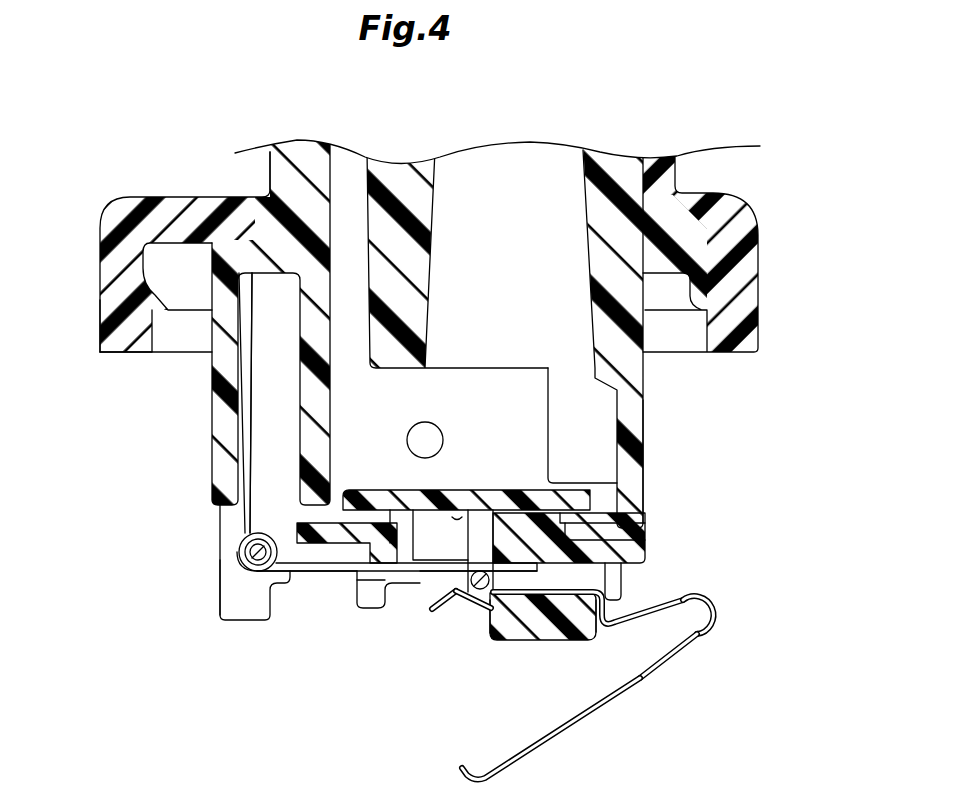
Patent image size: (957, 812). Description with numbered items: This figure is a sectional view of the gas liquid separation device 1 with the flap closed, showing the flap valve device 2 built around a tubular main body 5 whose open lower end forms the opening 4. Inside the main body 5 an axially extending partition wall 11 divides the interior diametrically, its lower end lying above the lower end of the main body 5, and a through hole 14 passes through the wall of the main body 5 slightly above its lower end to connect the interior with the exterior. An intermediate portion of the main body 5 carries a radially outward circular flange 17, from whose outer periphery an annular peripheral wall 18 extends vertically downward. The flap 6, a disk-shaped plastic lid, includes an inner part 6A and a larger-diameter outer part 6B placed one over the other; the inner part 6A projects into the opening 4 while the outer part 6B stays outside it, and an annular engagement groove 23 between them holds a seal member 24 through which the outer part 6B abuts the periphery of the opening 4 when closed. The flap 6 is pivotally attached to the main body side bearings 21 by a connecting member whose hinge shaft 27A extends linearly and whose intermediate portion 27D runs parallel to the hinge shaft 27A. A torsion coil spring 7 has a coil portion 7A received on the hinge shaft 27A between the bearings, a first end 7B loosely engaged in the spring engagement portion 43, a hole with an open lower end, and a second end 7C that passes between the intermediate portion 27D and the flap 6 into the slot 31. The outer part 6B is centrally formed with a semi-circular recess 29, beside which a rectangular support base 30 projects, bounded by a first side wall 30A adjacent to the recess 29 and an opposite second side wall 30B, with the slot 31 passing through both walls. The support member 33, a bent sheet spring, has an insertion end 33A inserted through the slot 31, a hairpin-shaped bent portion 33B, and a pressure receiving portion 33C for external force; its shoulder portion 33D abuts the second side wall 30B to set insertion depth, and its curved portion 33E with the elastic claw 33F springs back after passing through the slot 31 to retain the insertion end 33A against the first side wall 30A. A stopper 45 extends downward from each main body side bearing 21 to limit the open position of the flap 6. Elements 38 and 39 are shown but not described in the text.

The gas liquid separation device 1 is at (186, 172).
The flap valve device 2 is at (698, 449).
The opening 4 is at (614, 463).
The main body 5 is at (683, 173).
The flap 6 is at (390, 698).
The inner part 6A is at (408, 493).
The outer part 6B is at (378, 612).
The torsion coil spring 7 is at (336, 471).
The coil portion 7A is at (238, 586).
The first end 7B is at (243, 460).
The second end 7C is at (420, 605).
The partition wall 11 is at (418, 270).
The through hole 14 is at (418, 424).
The flange 17 is at (125, 215).
The peripheral wall 18 is at (118, 345).
The main body side bearings 21 is at (260, 600).
The annular engagement groove 23 is at (568, 514).
The seal member 24 is at (648, 530).
The hinge shaft 27A is at (240, 540).
The intermediate portion 27D is at (481, 570).
The recess 29 is at (457, 517).
The support base 30 is at (544, 659).
The first side wall 30A is at (490, 645).
The second side wall 30B is at (568, 628).
The slot 31 is at (612, 583).
The support member 33 is at (583, 683).
The insertion end 33A is at (560, 680).
The bent portion 33B is at (705, 630).
The pressure receiving portion 33C is at (630, 688).
The shoulder portion 33D is at (650, 605).
The curved portion 33E is at (443, 628).
The elastic claw 33F is at (470, 616).
The block 38 is at (372, 608).
The plate 39 is at (365, 598).
The spring engagement portion 43 is at (258, 384).
The stopper 45 is at (228, 617).